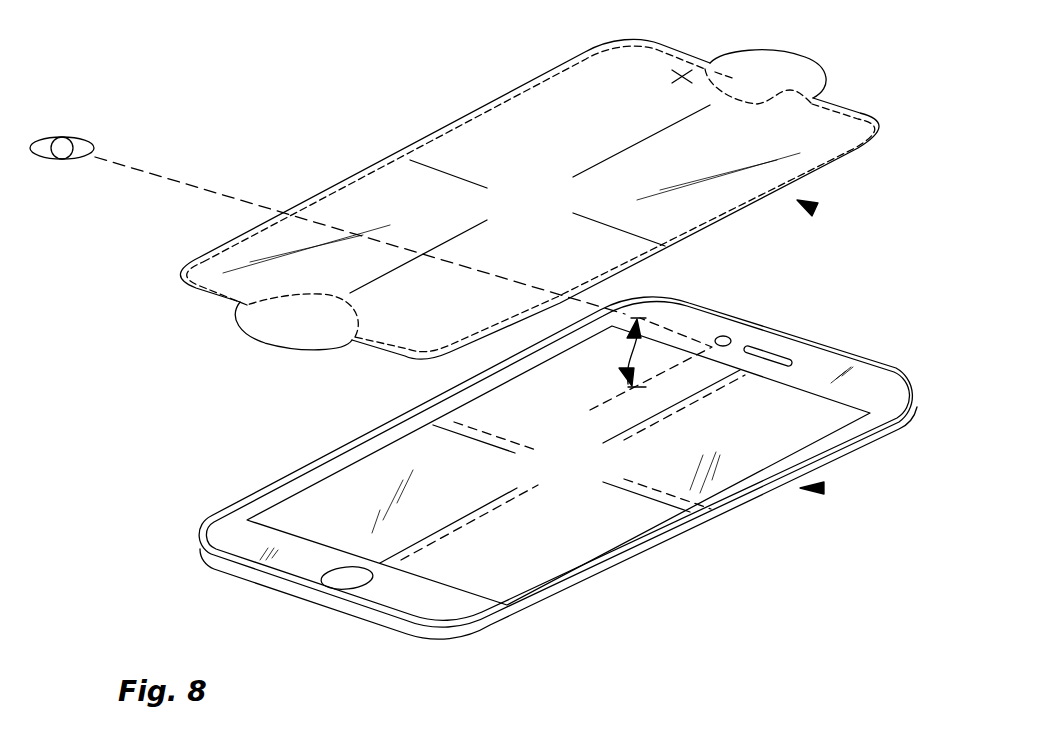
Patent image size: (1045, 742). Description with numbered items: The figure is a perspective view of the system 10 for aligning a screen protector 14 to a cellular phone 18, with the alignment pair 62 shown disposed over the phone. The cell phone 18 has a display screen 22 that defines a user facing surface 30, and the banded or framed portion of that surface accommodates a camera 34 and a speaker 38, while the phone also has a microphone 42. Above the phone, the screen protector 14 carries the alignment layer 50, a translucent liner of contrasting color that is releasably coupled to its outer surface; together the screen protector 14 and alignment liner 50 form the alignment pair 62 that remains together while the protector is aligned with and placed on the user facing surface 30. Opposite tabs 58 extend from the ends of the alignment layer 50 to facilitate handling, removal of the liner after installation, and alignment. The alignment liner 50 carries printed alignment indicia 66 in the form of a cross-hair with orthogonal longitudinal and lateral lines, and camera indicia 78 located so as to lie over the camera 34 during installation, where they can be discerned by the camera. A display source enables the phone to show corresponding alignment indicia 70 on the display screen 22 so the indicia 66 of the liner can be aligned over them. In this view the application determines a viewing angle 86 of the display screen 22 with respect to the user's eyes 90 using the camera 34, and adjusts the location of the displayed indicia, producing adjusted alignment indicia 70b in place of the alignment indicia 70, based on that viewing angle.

The system 10 is at (824, 488).
The screen protector 14 is at (507, 97).
The cellular phone 18 is at (865, 357).
The display screen 22 is at (513, 563).
The user facing surface 30 is at (430, 593).
The camera 34 is at (722, 334).
The speaker 38 is at (770, 350).
The microphone 42 is at (307, 593).
The alignment layer 50 is at (337, 218).
The tabs 58 is at (789, 72).
The alignment pair 62 is at (815, 208).
The alignment indicia 66 is at (447, 170).
The alignment indicia 70 is at (686, 500).
The adjusted alignment indicia 70b is at (625, 482).
The camera indicia 78 is at (676, 72).
The viewing angle 86 is at (625, 355).
The user's eyes 90 is at (62, 138).